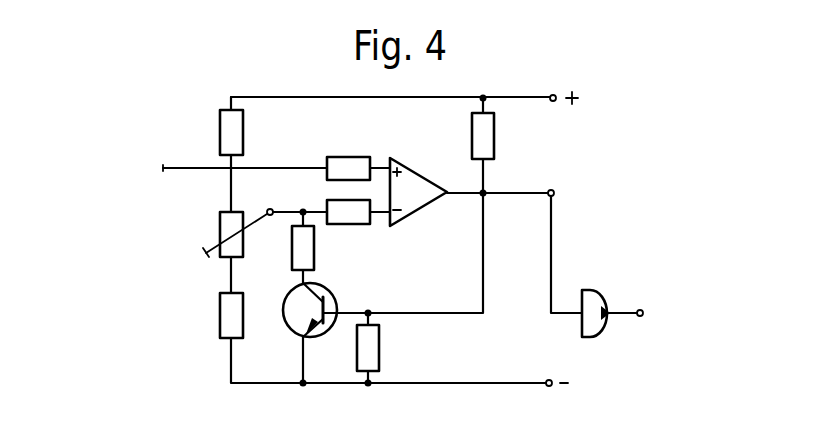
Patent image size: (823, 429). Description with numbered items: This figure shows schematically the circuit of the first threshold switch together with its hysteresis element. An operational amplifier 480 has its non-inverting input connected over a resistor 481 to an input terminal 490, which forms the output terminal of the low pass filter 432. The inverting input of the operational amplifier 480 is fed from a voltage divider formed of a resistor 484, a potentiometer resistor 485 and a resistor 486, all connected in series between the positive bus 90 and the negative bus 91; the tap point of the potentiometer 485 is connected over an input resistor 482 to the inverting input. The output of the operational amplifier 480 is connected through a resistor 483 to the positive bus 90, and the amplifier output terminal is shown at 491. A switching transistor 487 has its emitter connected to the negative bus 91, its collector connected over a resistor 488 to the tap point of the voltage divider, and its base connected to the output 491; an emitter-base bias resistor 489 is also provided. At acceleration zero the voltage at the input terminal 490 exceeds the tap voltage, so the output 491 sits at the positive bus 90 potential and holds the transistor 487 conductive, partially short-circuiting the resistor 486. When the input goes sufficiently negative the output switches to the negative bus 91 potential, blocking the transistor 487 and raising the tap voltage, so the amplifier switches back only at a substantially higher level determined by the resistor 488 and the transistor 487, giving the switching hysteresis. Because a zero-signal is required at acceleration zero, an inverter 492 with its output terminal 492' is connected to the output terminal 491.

The positive bus 90 is at (513, 97).
The negative bus 91 is at (501, 383).
The low pass filter 432 is at (159, 174).
The operational amplifier 480 is at (413, 176).
The resistor 481 is at (352, 166).
The input resistor 482 is at (352, 214).
The resistor 483 is at (486, 135).
The resistor 484 is at (235, 128).
The potentiometer resistor 485 is at (222, 224).
The resistor 486 is at (223, 309).
The switching transistor 487 is at (334, 296).
The resistor 488 is at (307, 249).
The emitter-base bias resistor 489 is at (379, 345).
The input terminal 490 is at (162, 167).
The output terminal 491 is at (554, 193).
The inverter 492 is at (611, 323).
The output terminal 492' is at (689, 326).